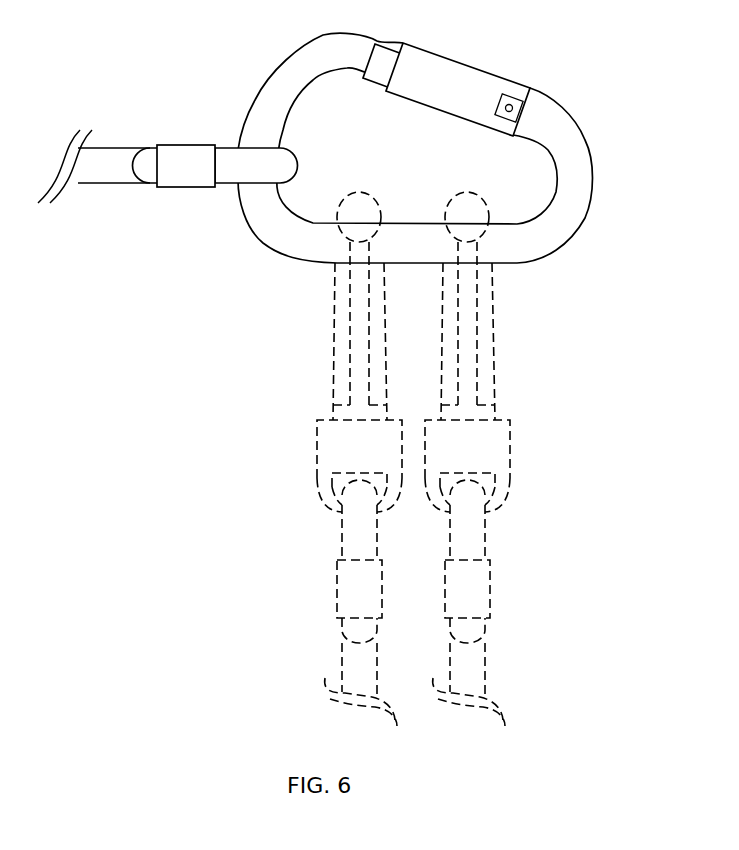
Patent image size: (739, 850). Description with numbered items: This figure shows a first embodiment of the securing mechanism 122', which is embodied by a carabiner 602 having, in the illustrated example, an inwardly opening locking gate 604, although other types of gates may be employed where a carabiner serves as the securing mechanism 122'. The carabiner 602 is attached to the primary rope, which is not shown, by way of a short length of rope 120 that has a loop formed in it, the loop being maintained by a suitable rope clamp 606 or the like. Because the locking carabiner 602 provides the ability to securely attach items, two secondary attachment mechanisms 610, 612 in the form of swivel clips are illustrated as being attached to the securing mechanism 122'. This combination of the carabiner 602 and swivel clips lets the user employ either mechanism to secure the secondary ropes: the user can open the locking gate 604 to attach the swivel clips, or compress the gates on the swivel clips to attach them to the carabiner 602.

The securing mechanism 122' is at (315, 131).
The carabiner 602 is at (323, 34).
The locking gate 604 is at (462, 68).
The short length of rope 120 is at (226, 158).
The rope clamp 606 is at (173, 176).
The secondary attachment mechanism 610 is at (303, 379).
The secondary attachment mechanism 612 is at (527, 379).